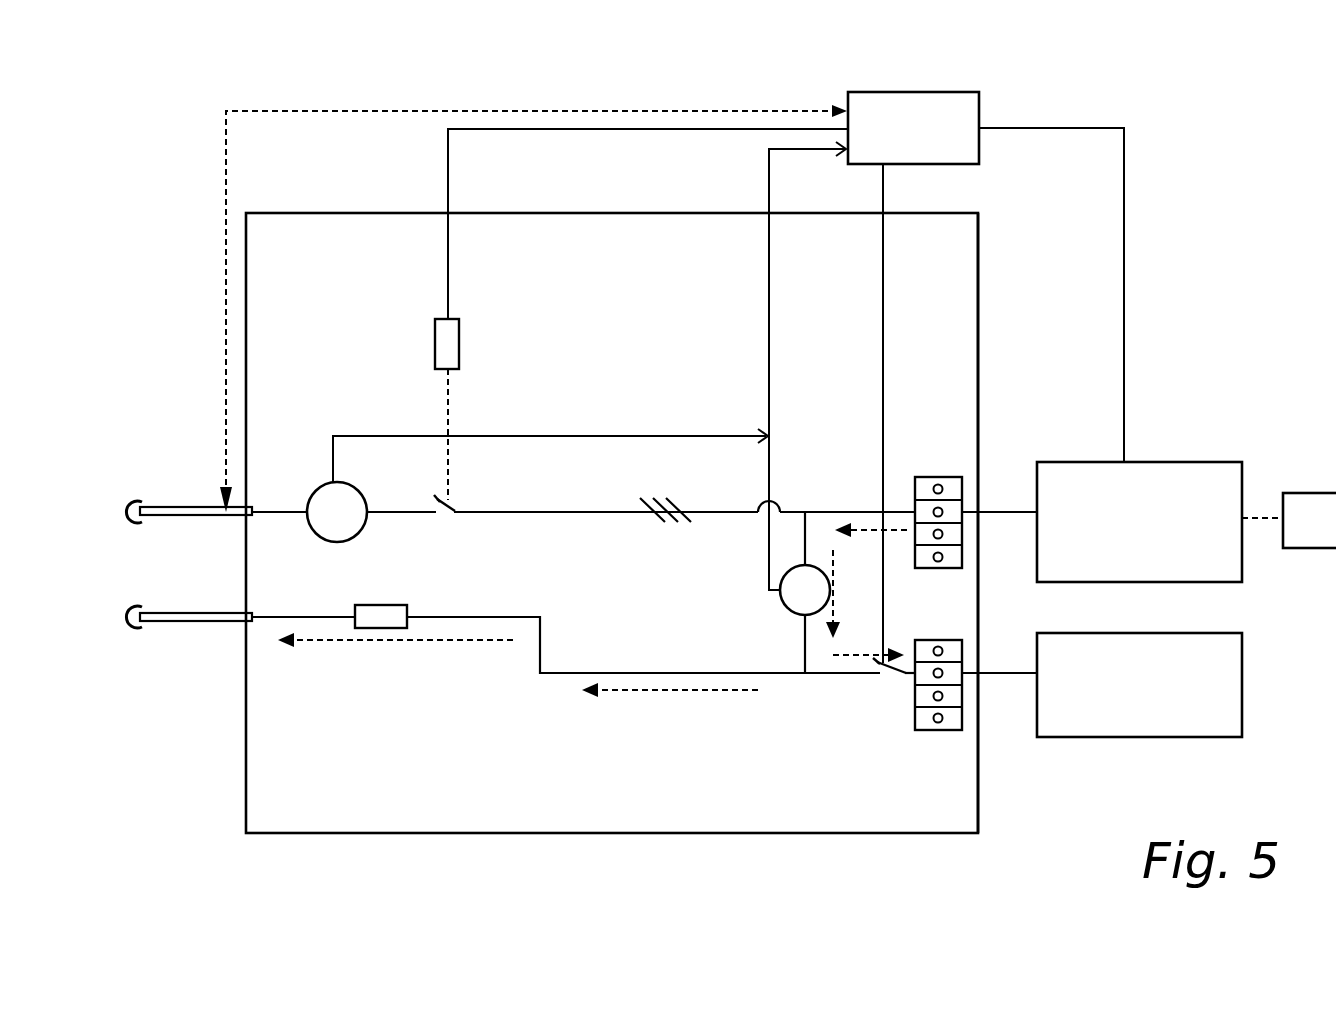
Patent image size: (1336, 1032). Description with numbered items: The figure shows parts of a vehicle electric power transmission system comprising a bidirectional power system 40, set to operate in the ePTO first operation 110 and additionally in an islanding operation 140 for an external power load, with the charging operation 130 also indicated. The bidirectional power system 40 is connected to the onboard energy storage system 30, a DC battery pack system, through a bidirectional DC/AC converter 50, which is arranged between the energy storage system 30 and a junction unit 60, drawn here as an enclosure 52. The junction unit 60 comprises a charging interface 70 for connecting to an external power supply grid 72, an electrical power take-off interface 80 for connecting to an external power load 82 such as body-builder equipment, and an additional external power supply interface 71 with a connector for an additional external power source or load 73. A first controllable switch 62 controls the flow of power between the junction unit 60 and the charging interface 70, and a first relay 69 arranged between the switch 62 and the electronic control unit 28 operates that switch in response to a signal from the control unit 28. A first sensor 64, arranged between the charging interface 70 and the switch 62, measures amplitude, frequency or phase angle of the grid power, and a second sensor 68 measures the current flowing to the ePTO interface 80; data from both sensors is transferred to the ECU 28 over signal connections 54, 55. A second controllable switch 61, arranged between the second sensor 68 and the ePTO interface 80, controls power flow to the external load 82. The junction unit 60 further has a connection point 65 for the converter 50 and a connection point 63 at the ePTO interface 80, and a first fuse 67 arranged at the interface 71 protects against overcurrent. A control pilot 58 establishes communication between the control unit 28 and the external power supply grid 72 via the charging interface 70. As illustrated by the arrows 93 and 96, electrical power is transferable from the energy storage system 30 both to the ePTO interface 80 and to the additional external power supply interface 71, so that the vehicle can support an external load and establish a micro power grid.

The electronic control unit 28 is at (983, 110).
The onboard energy storage system 30 is at (1317, 493).
The bidirectional power system 40 is at (188, 141).
The bidirectional DC/AC converter 50 is at (1172, 462).
The housing wall 52 is at (980, 302).
The signal line 54 is at (698, 130).
The signal line 55 is at (770, 316).
The control pilot 58 is at (385, 110).
The junction unit 60 is at (295, 230).
The second controllable switch 61 is at (890, 675).
The first controllable switch 62 is at (448, 513).
The connection point 63 is at (938, 730).
The first sensor 64 is at (322, 484).
The connection point 65 is at (938, 477).
The first fuse 67 is at (375, 628).
The second sensor 68 is at (787, 608).
The first relay 69 is at (459, 342).
The charging interface 70 is at (178, 507).
The additional external power supply interface 71 is at (180, 622).
The external power supply grid 72 is at (125, 510).
The additional external power source or load 73 is at (125, 620).
The electrical power take-off interface 80 is at (980, 688).
The external power load 82 is at (1147, 737).
The arrow 93 is at (858, 658).
The arrow 96 is at (697, 690).
The ePTO first operation 110 is at (170, 218).
The charging operation 130 is at (1210, 159).
The islanding operation 140 is at (1185, 103).